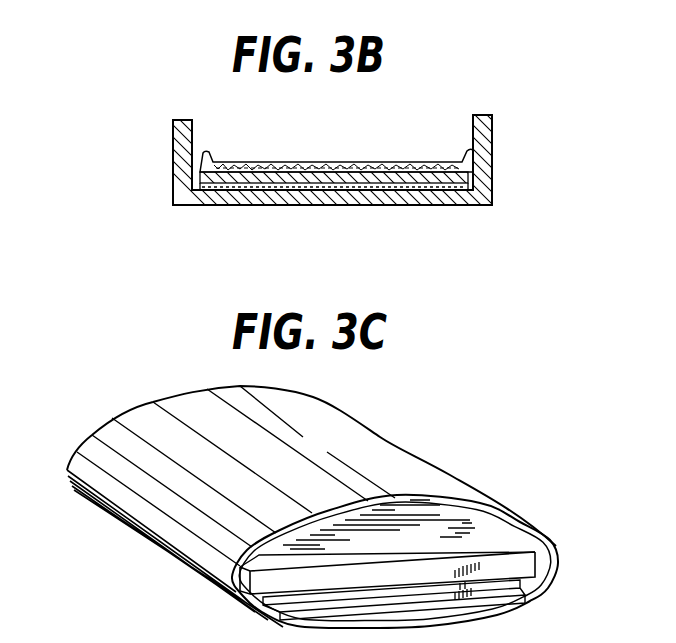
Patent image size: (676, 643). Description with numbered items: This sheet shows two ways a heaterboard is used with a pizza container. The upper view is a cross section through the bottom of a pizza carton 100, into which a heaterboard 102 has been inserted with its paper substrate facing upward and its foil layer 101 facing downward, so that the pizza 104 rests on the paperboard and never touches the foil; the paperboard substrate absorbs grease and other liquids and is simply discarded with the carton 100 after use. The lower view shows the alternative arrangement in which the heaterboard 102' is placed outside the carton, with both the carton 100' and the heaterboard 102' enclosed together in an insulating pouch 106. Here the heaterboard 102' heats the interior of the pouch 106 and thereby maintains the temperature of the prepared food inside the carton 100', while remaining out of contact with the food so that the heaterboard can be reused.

In FIG. 3B, the pizza carton 100 is at (289, 160).
In FIG. 3B, the foil layer 101 is at (465, 204).
In FIG. 3B, the heaterboard 102 is at (382, 172).
In FIG. 3B, the pizza 104 is at (472, 153).
In FIG. 3C, the insulating pouch 106 is at (412, 463).
In FIG. 3C, the carton 100' is at (436, 547).
In FIG. 3C, the heaterboard 102' is at (443, 611).